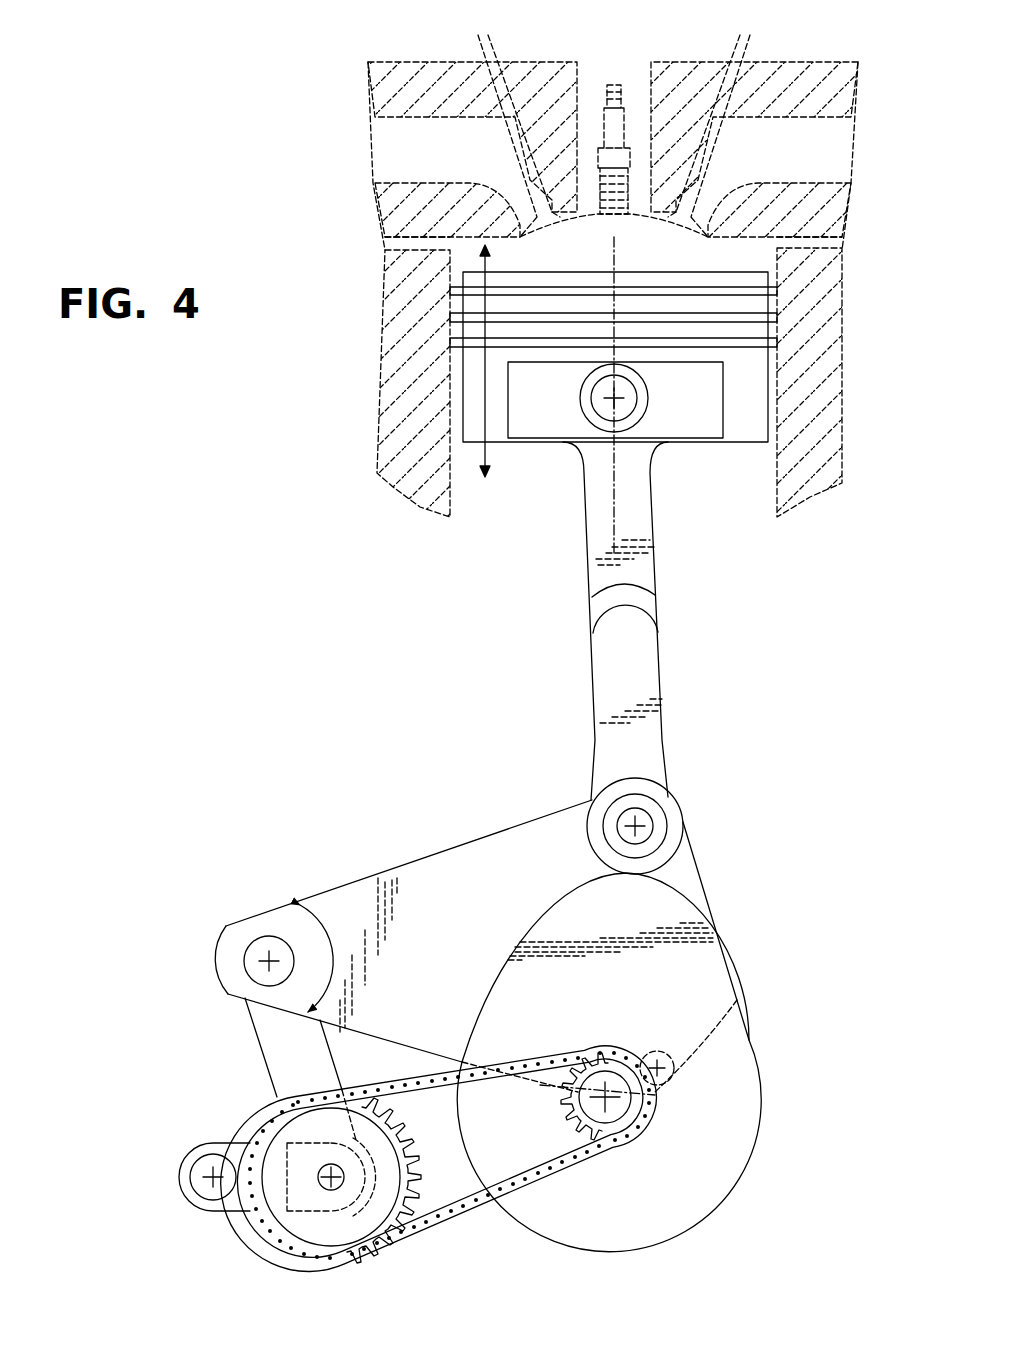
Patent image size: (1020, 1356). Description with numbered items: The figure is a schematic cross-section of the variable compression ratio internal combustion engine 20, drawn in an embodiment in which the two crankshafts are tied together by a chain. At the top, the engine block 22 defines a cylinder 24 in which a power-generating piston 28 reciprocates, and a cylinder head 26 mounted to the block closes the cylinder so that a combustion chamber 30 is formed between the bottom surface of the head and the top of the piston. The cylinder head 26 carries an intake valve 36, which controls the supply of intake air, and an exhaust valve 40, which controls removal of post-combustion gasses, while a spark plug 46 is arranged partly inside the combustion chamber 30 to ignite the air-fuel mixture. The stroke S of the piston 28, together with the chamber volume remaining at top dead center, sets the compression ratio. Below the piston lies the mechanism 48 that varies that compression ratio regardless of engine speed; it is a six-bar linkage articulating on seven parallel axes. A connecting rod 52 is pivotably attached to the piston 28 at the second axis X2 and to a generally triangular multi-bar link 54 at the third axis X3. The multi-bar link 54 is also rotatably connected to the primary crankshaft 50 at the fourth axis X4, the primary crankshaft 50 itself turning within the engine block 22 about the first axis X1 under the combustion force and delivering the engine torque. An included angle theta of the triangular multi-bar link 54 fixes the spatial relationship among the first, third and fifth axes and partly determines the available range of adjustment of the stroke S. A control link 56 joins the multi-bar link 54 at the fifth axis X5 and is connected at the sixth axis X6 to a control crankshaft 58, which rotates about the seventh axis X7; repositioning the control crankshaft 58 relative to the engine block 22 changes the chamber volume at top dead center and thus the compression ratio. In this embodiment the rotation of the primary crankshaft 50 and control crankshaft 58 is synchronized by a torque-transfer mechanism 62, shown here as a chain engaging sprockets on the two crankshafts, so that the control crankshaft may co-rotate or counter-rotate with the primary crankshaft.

The internal combustion engine 20 is at (716, 569).
The engine block 22 is at (820, 369).
The cylinders 24 is at (780, 312).
The cylinder head 26 is at (810, 239).
The piston 28 is at (690, 272).
The combustion chambers 30 is at (580, 260).
The intake valves 36 is at (527, 187).
The exhaust valves 40 is at (708, 187).
The spark plugs 46 is at (602, 120).
The mechanism 48 is at (322, 803).
The primary crankshaft 50 is at (735, 1005).
The connecting rod 52 is at (600, 522).
The multi-bar link 54 is at (243, 1212).
The control link 56 is at (258, 1063).
The control crankshaft 58 is at (510, 826).
The torque-transfer mechanism 62 is at (472, 1228).
The first axis X1 is at (608, 1100).
The second axis X2 is at (616, 400).
The third axis X3 is at (638, 824).
The fourth axis X4 is at (660, 1080).
The fifth axis X5 is at (268, 958).
The sixth axis X6 is at (335, 1182).
The seventh axis X7 is at (210, 1175).
The stroke S is at (495, 460).
The included angle theta is at (316, 958).